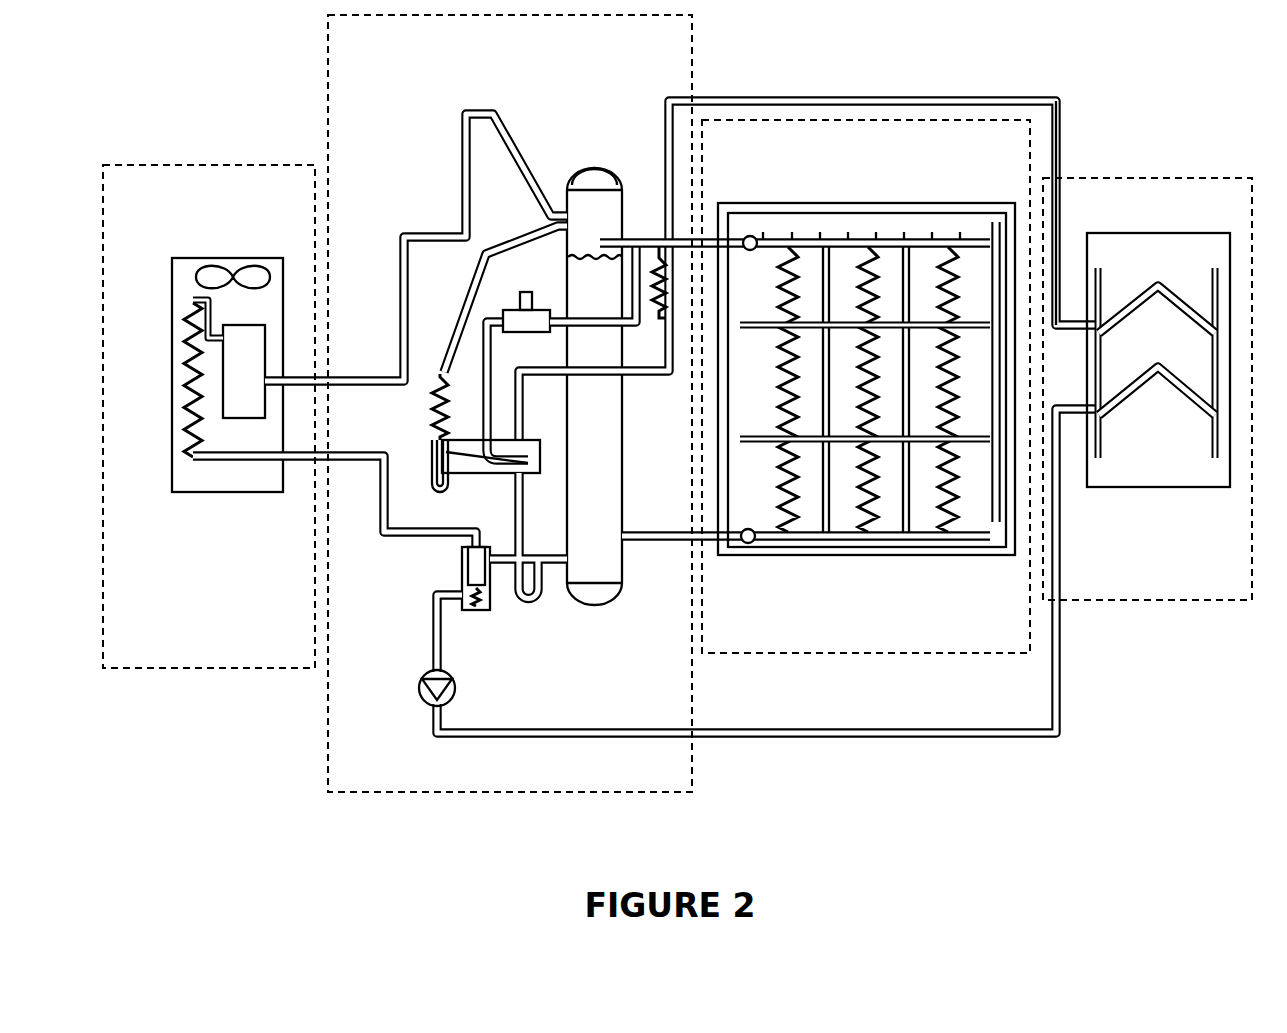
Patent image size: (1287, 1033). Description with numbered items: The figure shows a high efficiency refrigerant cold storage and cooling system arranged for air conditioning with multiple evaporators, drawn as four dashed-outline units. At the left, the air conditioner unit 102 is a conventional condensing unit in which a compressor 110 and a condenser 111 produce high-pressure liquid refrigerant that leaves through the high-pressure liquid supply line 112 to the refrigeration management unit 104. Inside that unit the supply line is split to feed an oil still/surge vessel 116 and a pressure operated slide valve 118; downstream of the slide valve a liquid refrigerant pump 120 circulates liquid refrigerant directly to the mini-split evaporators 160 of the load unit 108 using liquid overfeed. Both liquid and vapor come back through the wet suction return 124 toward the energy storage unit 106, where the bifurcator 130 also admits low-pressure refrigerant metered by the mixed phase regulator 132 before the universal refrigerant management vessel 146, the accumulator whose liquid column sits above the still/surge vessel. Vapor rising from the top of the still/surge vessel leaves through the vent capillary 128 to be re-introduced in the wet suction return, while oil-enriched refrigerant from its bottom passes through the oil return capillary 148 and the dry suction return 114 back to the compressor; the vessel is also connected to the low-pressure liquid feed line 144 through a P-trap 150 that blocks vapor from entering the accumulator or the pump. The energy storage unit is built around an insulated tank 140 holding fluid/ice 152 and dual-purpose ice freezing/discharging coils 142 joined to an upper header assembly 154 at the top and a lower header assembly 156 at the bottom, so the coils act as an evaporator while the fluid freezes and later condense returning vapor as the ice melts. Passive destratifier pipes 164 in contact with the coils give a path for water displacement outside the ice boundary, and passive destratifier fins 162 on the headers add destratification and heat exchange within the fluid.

The air conditioner unit 102 is at (272, 670).
The refrigeration management unit 104 is at (472, 793).
The energy storage unit 106 is at (847, 653).
The load unit 108 is at (1158, 600).
The compressor 110 is at (253, 325).
The condenser 111 is at (137, 313).
The high-pressure liquid supply line 112 is at (303, 462).
The dry suction return 114 is at (303, 377).
The oil still/surge vessel 116 is at (568, 458).
The pressure operated slide valve 118 is at (462, 558).
The liquid refrigerant pump 120 is at (418, 684).
The wet suction return 124 is at (1053, 97).
The vent capillary 128 is at (655, 300).
The bifurcator 130 is at (887, 183).
The mixed phase regulator 132 is at (526, 292).
The insulated tank 140 is at (837, 557).
The ice freezing/discharging coils 142 is at (963, 517).
The low-pressure liquid feed line 144 is at (493, 240).
The universal refrigerant management vessel 146 is at (598, 172).
The oil return capillary 148 is at (430, 400).
The P-trap 150 is at (543, 598).
The fluid/ice 152 is at (980, 252).
The upper header assembly 154 is at (903, 240).
The lower header assembly 156 is at (883, 540).
The mini-split evaporators 160 is at (1082, 487).
The passive destratifier fins 162 is at (645, 243).
The passive destratifier pipes 164 is at (800, 447).